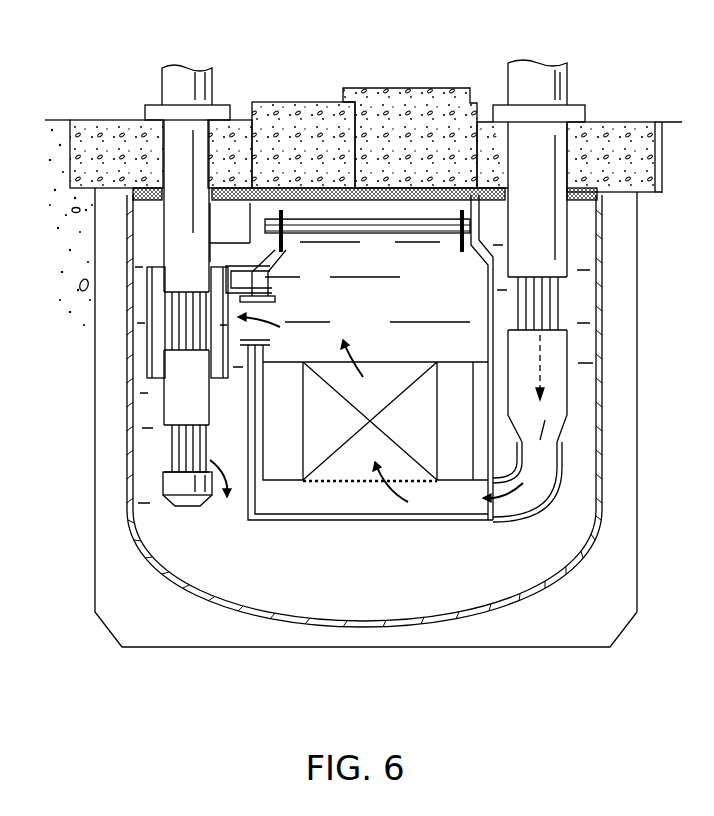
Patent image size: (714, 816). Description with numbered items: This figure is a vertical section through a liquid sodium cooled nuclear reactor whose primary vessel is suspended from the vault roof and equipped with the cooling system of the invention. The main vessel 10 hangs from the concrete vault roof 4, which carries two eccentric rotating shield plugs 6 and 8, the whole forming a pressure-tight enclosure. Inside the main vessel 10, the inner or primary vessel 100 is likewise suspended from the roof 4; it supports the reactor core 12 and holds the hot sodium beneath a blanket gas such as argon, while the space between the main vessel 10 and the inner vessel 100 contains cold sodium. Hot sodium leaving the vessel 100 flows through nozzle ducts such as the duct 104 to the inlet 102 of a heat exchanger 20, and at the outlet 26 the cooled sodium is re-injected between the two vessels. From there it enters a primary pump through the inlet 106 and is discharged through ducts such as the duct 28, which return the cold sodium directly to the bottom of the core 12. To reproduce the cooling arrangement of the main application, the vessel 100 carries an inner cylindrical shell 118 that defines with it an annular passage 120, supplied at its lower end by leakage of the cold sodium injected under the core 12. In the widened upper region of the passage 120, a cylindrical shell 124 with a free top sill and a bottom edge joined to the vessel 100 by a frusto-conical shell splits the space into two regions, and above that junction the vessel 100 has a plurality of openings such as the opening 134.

The reactor vault roof 4 is at (612, 135).
The eccentric rotating shield plug 6 is at (403, 120).
The eccentric rotating shield plug 8 is at (298, 118).
The main vessel 10 is at (604, 430).
The reactor core 12 is at (388, 372).
The primary heat-exchanger 20 is at (180, 243).
The outlet of heat exchanger 26 is at (185, 458).
The duct 28 is at (540, 490).
The inner vessel 100 is at (474, 268).
The inlet of heat exchanger 102 is at (182, 330).
The nozzle duct 104 is at (270, 282).
The inlet of pump 106 is at (552, 290).
The inner cylindrical shell 118 is at (297, 236).
The annular passage 120 is at (262, 455).
The cylindrical shell 124 is at (263, 205).
The opening 134 is at (246, 263).